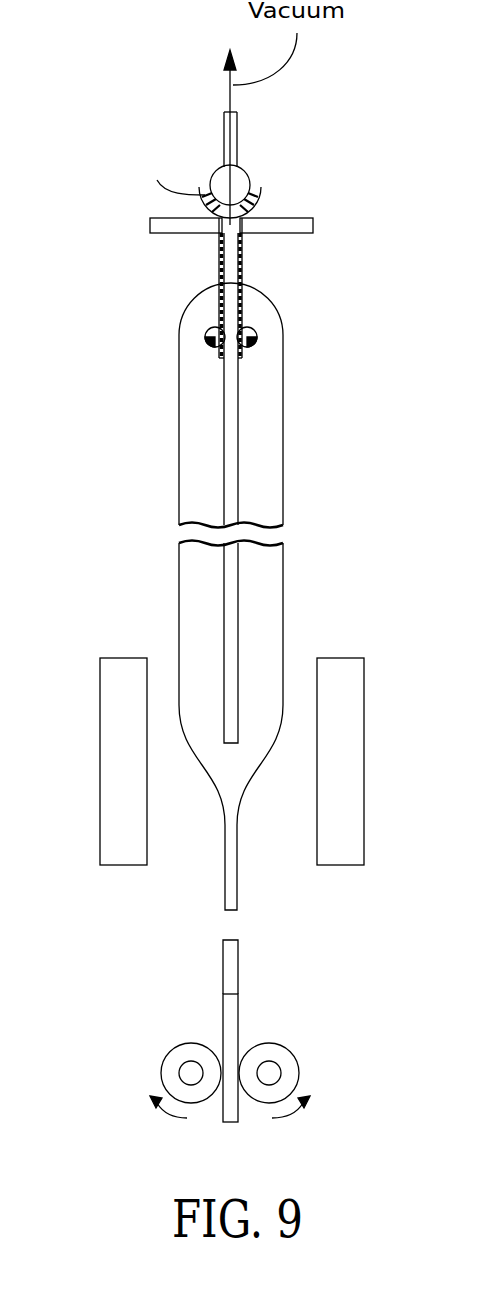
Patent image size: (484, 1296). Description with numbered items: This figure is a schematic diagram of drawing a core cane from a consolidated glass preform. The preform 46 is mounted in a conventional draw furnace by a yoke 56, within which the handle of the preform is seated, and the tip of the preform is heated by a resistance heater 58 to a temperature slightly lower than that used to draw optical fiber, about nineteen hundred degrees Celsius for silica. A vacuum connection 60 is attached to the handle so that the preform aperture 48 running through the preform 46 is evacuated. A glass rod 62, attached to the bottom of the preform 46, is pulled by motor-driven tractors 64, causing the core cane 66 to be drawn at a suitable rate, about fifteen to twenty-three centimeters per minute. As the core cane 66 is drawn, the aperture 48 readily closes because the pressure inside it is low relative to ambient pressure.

The preform 46 is at (178, 440).
The preform aperture 48 is at (230, 453).
The yoke 56 is at (277, 235).
The resistance heater 58 is at (100, 730).
The vacuum connection 60 is at (238, 135).
The glass rod 62 is at (223, 1015).
The motor-driven tractors 64 is at (175, 1047).
The core cane 66 is at (239, 965).